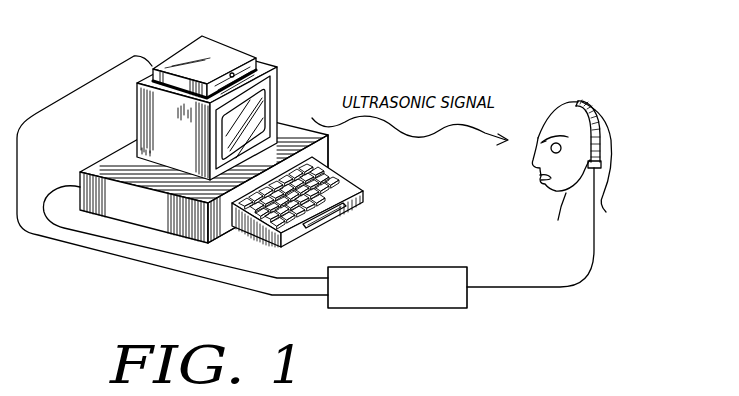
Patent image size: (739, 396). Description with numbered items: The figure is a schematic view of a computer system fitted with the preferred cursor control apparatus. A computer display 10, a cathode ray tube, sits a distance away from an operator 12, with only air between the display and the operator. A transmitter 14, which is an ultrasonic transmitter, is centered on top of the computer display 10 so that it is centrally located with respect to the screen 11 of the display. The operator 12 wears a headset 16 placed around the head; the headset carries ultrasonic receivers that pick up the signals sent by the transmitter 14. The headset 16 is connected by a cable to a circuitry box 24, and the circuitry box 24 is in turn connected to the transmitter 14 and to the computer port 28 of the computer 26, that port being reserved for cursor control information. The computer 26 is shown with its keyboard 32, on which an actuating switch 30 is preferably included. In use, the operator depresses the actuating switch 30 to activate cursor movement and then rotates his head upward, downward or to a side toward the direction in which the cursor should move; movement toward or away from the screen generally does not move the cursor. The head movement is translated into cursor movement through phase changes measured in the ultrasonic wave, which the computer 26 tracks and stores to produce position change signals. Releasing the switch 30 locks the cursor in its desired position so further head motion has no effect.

The computer display 10 is at (277, 65).
The screen 11 is at (253, 98).
The operator 12 is at (609, 137).
The transmitter 14 is at (207, 47).
The headset 16 is at (578, 101).
The circuitry box 24 is at (397, 266).
The computer 26 is at (324, 141).
The computer port 28 is at (167, 249).
The actuating switch 30 is at (338, 216).
The keyboard 32 is at (352, 178).